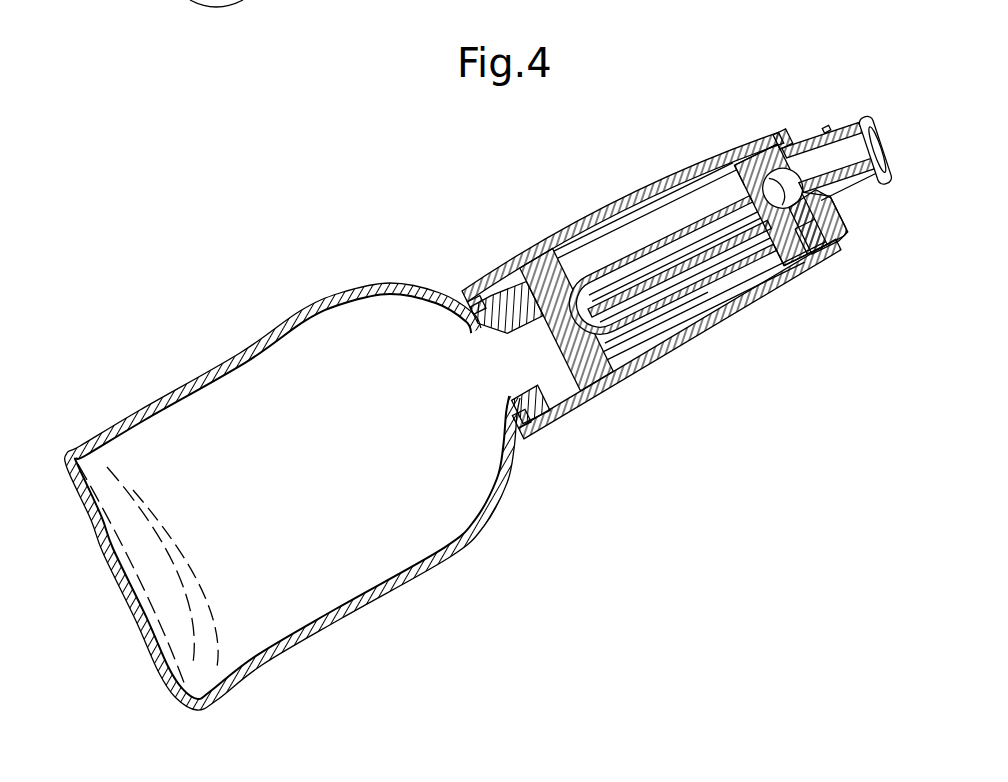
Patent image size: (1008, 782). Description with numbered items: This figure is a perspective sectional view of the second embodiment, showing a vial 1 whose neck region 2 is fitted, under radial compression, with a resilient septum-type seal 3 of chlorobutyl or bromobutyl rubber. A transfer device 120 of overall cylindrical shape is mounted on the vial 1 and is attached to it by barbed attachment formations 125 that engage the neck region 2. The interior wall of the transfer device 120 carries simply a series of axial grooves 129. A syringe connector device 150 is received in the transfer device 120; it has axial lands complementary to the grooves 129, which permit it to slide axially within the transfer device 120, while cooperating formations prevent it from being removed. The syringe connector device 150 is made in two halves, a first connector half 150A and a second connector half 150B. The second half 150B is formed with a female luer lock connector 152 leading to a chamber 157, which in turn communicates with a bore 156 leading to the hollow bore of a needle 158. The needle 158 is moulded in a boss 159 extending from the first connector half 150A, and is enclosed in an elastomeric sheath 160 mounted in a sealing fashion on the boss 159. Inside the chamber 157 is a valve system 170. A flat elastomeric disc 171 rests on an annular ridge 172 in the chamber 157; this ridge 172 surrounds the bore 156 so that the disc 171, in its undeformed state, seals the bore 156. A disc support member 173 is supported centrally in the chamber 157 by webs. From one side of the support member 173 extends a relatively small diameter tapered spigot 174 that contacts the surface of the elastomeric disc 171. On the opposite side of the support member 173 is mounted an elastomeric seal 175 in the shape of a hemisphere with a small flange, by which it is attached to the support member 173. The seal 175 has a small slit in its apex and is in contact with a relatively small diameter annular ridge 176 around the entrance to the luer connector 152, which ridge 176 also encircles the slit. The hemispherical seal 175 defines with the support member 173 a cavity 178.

The vial 1 is at (137, 368).
The neck region 2 is at (470, 300).
The resilient septum-type seal 3 is at (510, 298).
The transfer device 120 is at (570, 204).
The barbed attachment formations 125 is at (540, 406).
The axial grooves 129 is at (567, 263).
The syringe connector device 150 is at (824, 84).
The first connector half 150A is at (798, 288).
The second connector half 150B is at (745, 167).
The female luer lock connector 152 is at (866, 198).
The bore 156 is at (710, 284).
The chamber 157 is at (808, 225).
The needle 158 is at (633, 296).
The boss 159 is at (688, 232).
The elastomeric sheath 160 is at (617, 324).
The valve system 170 is at (745, 160).
The flat elastomeric disc 171 is at (706, 214).
The annular ridge 172 is at (774, 292).
The disc support member 173 is at (805, 246).
The tapered spigot 174 is at (722, 262).
The elastomeric seal 175 is at (800, 150).
The annular ridge 176 is at (842, 212).
The cavity 178 is at (772, 190).